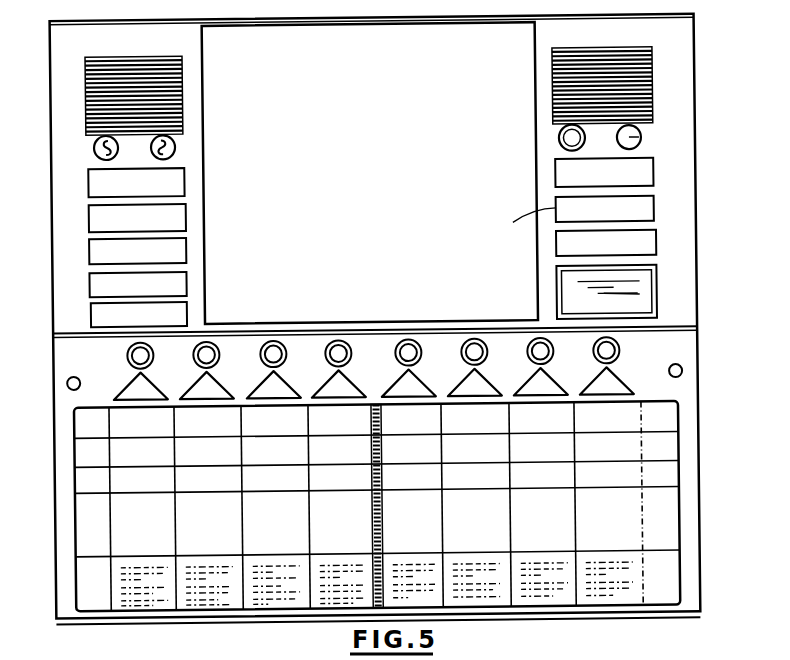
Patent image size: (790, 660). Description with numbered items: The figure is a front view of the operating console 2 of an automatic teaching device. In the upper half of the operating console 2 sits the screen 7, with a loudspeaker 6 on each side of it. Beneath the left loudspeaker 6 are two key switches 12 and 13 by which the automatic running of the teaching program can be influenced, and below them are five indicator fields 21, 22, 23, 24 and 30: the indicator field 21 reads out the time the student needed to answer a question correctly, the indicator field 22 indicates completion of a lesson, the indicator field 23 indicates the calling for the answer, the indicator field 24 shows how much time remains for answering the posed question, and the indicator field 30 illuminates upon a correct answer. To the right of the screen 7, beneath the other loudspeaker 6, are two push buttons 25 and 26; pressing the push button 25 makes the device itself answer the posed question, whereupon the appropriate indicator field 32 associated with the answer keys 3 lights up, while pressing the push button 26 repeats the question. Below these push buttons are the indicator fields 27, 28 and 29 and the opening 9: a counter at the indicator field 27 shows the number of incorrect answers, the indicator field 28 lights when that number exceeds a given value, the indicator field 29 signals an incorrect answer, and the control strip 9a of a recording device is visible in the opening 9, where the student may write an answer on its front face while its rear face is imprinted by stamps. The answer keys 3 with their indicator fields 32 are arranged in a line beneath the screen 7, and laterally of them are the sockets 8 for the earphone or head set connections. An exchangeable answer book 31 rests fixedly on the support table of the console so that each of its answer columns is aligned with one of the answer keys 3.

The operating console 2 is at (48, 374).
The answer keys 3 is at (127, 352).
The loudspeakers 6 is at (126, 66).
The screen 7 is at (378, 98).
The sockets 8 is at (374, 367).
The opening 9 is at (617, 292).
The control strip 9a is at (633, 305).
The key switch 12 is at (93, 148).
The key switch 13 is at (174, 147).
The indicator field 21 is at (124, 182).
The indicator field 22 is at (125, 218).
The indicator field 23 is at (125, 251).
The indicator field 24 is at (125, 284).
The push button 25 is at (564, 138).
The push button 26 is at (645, 140).
The indicator field 27 is at (618, 171).
The indicator field 28 is at (561, 207).
The indicator field 29 is at (619, 242).
The indicator field 30 is at (126, 314).
The answer book 31 is at (92, 508).
The indicator fields 32 is at (268, 385).